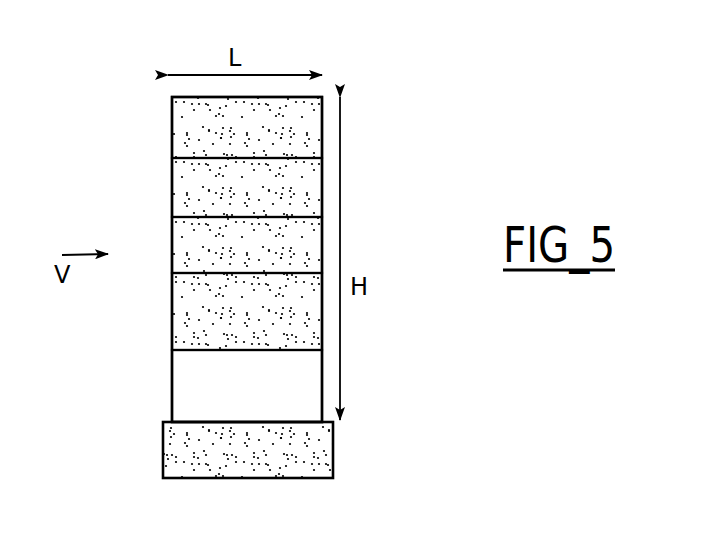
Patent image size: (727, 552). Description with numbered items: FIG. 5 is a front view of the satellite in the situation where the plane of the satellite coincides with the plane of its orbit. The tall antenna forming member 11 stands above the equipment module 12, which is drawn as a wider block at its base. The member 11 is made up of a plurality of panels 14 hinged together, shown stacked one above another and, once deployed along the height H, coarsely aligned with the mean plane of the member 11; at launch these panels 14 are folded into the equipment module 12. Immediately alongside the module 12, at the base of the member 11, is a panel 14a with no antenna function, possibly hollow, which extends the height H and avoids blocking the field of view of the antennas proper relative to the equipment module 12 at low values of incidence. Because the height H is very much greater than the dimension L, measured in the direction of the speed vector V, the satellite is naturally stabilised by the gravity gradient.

The antenna forming member 11 is at (254, 390).
The equipment module 12 is at (345, 452).
The panels 14 is at (170, 300).
The panel with no antenna function 14a is at (182, 372).